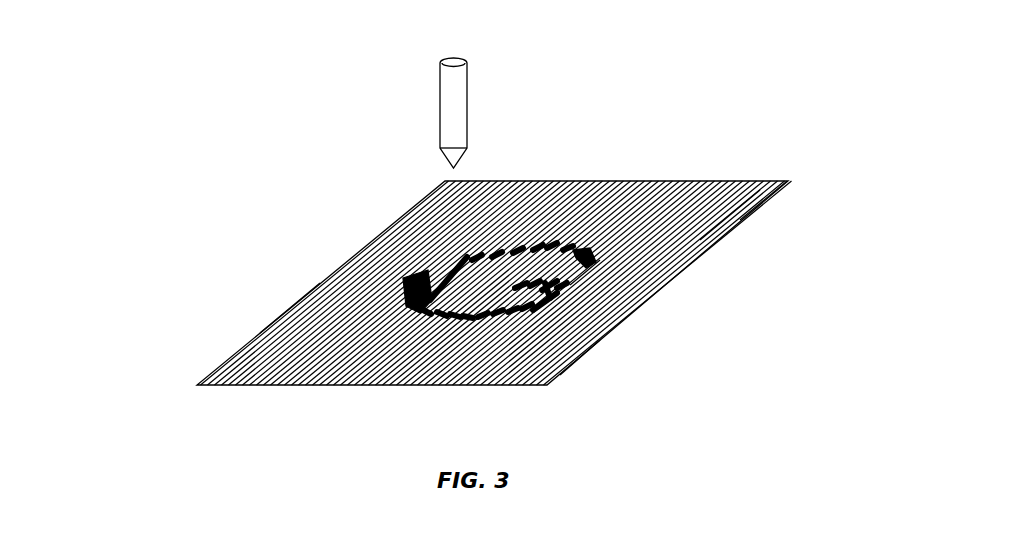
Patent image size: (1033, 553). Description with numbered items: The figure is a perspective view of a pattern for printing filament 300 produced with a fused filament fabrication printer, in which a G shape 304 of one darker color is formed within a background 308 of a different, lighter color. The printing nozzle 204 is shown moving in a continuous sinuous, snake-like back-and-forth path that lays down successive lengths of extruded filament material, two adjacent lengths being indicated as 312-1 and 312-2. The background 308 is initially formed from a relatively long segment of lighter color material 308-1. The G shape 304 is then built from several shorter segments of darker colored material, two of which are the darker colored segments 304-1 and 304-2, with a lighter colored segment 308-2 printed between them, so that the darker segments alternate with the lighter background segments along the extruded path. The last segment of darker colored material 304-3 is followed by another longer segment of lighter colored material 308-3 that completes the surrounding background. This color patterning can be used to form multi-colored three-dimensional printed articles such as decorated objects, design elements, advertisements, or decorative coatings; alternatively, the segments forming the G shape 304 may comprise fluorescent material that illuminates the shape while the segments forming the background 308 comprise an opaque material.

The pattern for printing filament 300 is at (265, 94).
The printing nozzle 204 is at (478, 113).
The G shape 304 is at (504, 304).
The darker colored segment 304-1 is at (568, 308).
The darker colored segment 304-2 is at (603, 264).
The last segment of darker colored material 304-3 is at (402, 271).
The background 308 is at (306, 278).
The relatively long segment of lighter color material 308-1 is at (581, 368).
The lighter colored segment 308-2 is at (589, 280).
The longer segment of lighter colored material 308-3 is at (285, 308).
The length of extruded filament material 312-1 is at (811, 166).
The length of extruded filament material 312-2 is at (722, 231).